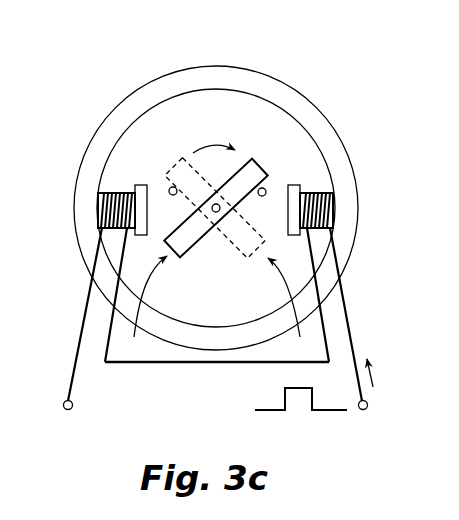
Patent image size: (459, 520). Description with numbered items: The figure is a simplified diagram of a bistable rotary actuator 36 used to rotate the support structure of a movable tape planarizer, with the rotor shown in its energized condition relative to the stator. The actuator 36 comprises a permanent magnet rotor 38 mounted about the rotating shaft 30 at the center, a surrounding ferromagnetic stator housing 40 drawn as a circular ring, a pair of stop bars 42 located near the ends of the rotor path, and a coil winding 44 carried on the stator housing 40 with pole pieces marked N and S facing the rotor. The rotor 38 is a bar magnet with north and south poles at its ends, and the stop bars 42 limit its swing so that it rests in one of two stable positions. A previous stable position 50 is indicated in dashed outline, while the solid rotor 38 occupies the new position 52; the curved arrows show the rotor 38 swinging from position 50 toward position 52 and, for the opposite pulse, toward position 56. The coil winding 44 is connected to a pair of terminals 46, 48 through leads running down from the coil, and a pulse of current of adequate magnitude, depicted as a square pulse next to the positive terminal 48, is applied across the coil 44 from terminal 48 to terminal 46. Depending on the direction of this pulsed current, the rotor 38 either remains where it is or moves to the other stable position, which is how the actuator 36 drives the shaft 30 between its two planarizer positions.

The bistable rotary actuator 36 is at (136, 64).
The ferromagnetic stator housing 40 is at (311, 101).
The coil winding 44 is at (105, 192).
The permanent magnet rotor 38 is at (263, 163).
The stable position 50 is at (238, 257).
The stop bars 42 is at (169, 189).
The rotating shaft 30 is at (218, 214).
The position 52 is at (145, 305).
The position 56 is at (289, 306).
The terminal 46 is at (69, 410).
The terminal 48 is at (362, 410).